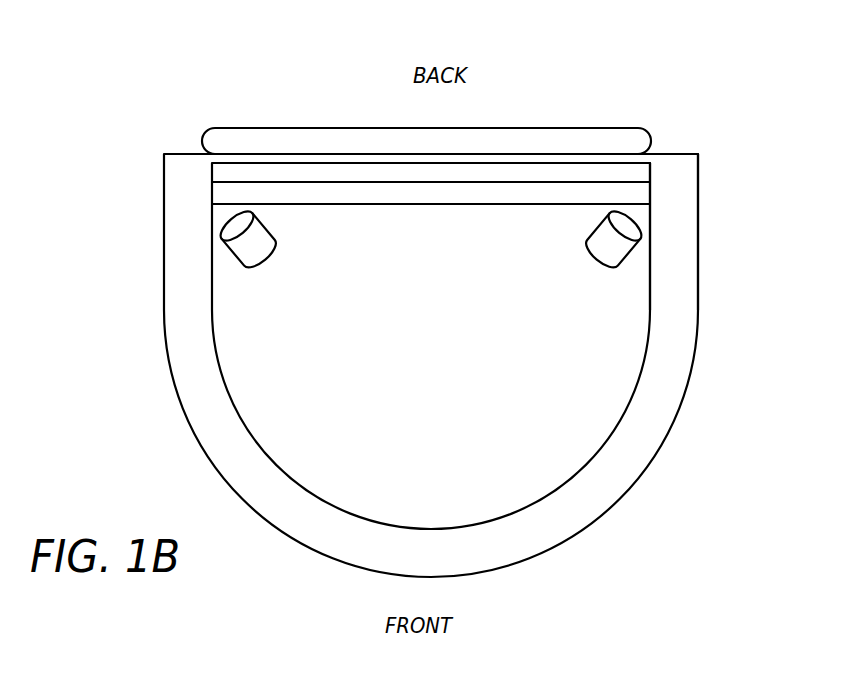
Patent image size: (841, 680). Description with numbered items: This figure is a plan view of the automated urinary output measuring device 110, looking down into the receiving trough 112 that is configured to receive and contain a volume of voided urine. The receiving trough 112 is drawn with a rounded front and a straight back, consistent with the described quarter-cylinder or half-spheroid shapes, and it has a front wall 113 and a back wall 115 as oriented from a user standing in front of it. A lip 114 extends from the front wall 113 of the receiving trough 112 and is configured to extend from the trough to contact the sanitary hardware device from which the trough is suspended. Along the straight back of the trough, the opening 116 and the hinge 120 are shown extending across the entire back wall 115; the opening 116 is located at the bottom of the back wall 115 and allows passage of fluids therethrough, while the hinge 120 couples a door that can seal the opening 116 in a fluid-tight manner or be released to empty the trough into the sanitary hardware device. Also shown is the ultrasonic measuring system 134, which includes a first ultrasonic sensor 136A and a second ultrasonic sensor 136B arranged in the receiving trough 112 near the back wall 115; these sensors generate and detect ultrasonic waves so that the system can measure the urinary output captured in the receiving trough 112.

The automated urinary output measuring device 110 is at (557, 85).
The receiving trough 112 is at (636, 306).
The front wall 113 is at (420, 530).
The lip 114 is at (578, 509).
The back wall 115 is at (450, 167).
The opening 116 is at (289, 192).
The hinge 120 is at (302, 128).
The ultrasonic measuring system 134 is at (676, 224).
The first ultrasonic sensor 136A is at (226, 228).
The second ultrasonic sensor 136B is at (632, 224).